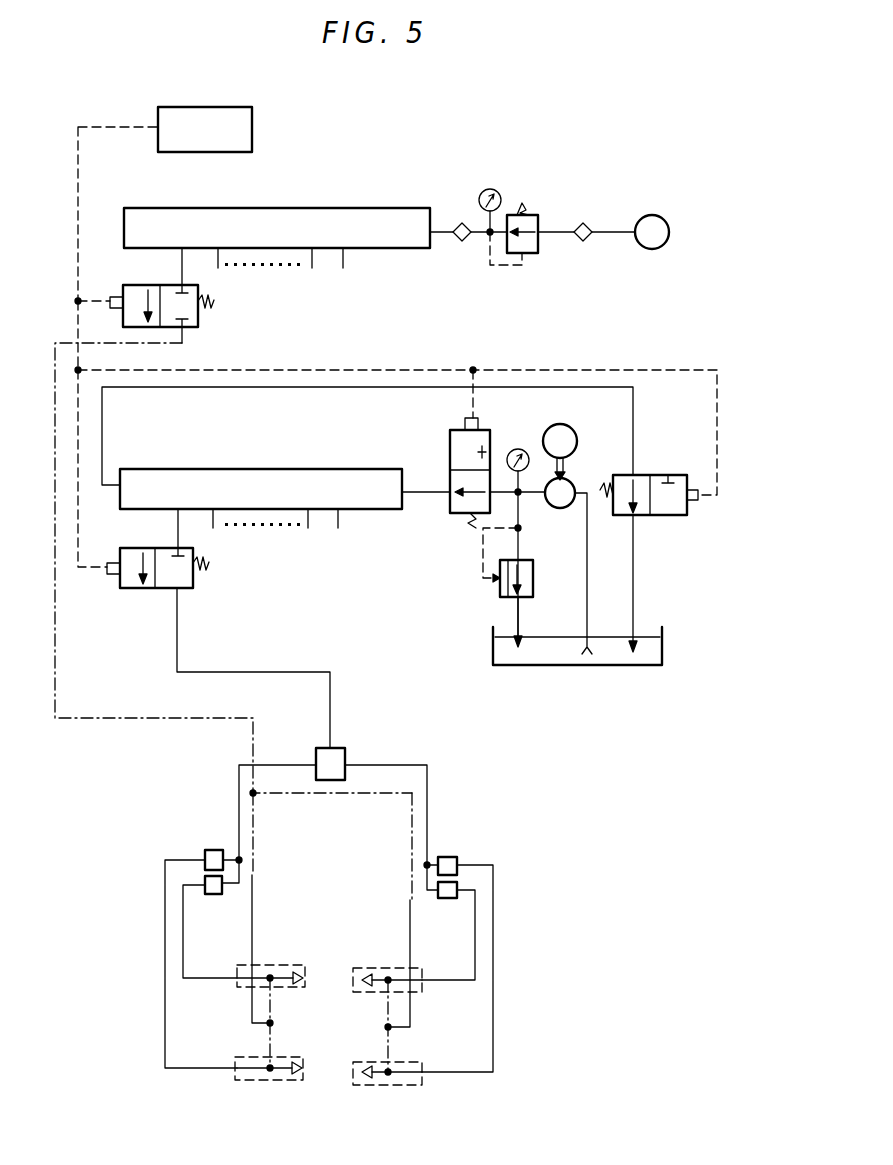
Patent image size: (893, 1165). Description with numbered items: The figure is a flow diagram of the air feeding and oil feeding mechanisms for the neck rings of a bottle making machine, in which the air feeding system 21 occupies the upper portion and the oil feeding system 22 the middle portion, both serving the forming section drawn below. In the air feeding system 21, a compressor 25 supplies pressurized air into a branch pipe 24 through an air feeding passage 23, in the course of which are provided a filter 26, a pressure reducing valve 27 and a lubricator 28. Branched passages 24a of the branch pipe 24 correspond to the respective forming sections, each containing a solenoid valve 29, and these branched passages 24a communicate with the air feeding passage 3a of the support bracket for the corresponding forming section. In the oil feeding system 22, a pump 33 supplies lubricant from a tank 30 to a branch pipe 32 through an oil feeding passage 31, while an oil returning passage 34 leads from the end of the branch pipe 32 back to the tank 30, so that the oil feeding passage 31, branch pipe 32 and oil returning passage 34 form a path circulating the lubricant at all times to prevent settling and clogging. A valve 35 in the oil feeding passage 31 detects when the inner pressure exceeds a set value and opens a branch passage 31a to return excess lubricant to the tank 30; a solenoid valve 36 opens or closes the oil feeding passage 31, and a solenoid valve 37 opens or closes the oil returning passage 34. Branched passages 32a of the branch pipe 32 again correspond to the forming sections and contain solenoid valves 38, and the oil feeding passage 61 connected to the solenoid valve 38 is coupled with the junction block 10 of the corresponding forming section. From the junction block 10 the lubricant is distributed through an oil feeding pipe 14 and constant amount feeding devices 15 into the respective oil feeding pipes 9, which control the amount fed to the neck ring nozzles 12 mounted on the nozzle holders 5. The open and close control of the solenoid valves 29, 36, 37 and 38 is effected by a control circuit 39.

The control circuit 39 is at (205, 129).
The air feeding system 21 is at (433, 178).
The branch pipe 24 is at (277, 229).
The branched passages 24a is at (180, 262).
The solenoid valve 29 is at (200, 326).
The lubricator 28 is at (460, 243).
The air feeding passage 23 is at (557, 232).
The pressure reducing valve 27 is at (532, 254).
The filter 26 is at (586, 224).
The compressor 25 is at (641, 250).
The oil feeding system 22 is at (548, 370).
The oil returning passage 34 is at (318, 387).
The branch pipe 32 is at (261, 489).
The branched passages 32a is at (176, 524).
The solenoid valves 38 is at (196, 587).
The oil feeding passage 61 is at (178, 646).
The solenoid valve 36 is at (450, 440).
The oil feeding passage 31 is at (545, 503).
The pump 33 is at (574, 488).
The solenoid valve 37 is at (645, 475).
The valve 35 is at (500, 585).
The branch passage 31a is at (520, 618).
The tank 30 is at (560, 665).
The junction block 10 is at (345, 752).
The oil feeding pipe 14 is at (238, 782).
The constant amount feeding devices 15 is at (212, 850).
The oil feeding pipes 9 is at (165, 922).
The air feeding passage 3a is at (256, 878).
The nozzle holders 5 is at (275, 968).
The neck ring nozzles 12 is at (305, 974).